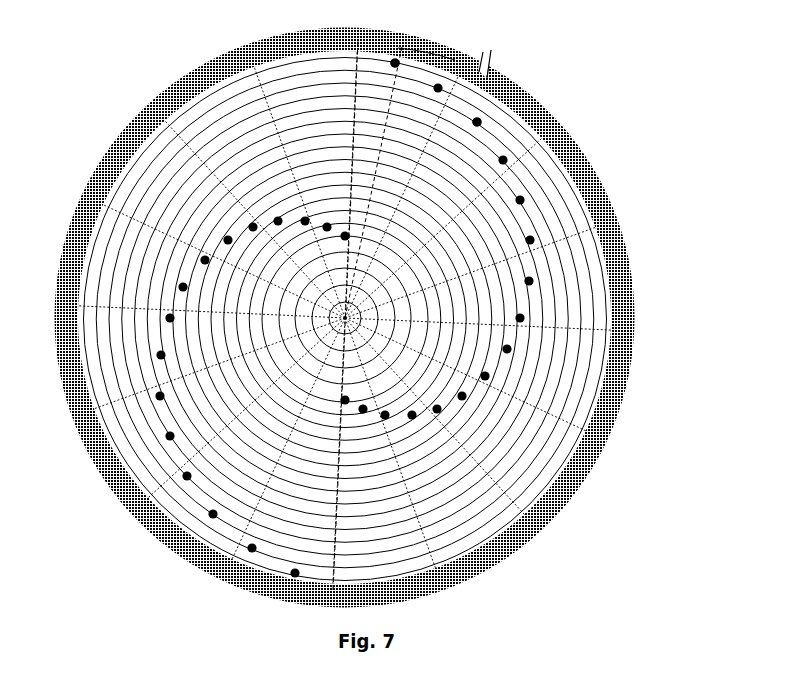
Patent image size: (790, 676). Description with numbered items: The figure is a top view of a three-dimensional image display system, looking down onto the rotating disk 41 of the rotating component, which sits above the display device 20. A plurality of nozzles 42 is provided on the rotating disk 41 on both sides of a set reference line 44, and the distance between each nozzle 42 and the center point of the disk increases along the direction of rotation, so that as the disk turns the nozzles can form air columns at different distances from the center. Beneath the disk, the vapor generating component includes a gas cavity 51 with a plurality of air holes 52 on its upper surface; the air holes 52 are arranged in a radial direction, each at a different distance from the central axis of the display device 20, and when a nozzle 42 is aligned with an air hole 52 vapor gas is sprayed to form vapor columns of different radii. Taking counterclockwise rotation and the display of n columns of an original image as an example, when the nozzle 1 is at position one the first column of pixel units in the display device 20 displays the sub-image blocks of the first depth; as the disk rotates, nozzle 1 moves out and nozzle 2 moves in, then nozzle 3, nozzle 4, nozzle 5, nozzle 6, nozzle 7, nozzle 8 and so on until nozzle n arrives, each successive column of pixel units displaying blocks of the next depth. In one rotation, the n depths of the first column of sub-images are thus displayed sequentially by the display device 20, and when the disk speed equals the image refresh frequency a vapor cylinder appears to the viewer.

The display device 20 is at (392, 356).
The rotating disk 41 is at (435, 62).
The nozzle 42 is at (490, 125).
The set reference line 44 is at (358, 40).
The gas cavity 51 is at (620, 212).
The air hole 52 is at (618, 318).
The nozzle 1 is at (398, 57).
The nozzle 2 is at (445, 78).
The nozzle 3 is at (482, 112).
The nozzle 4 is at (515, 145).
The nozzle 5 is at (536, 186).
The nozzle 6 is at (521, 245).
The nozzle 7 is at (523, 281).
The nozzle 8 is at (513, 319).
The nozzle n is at (348, 392).